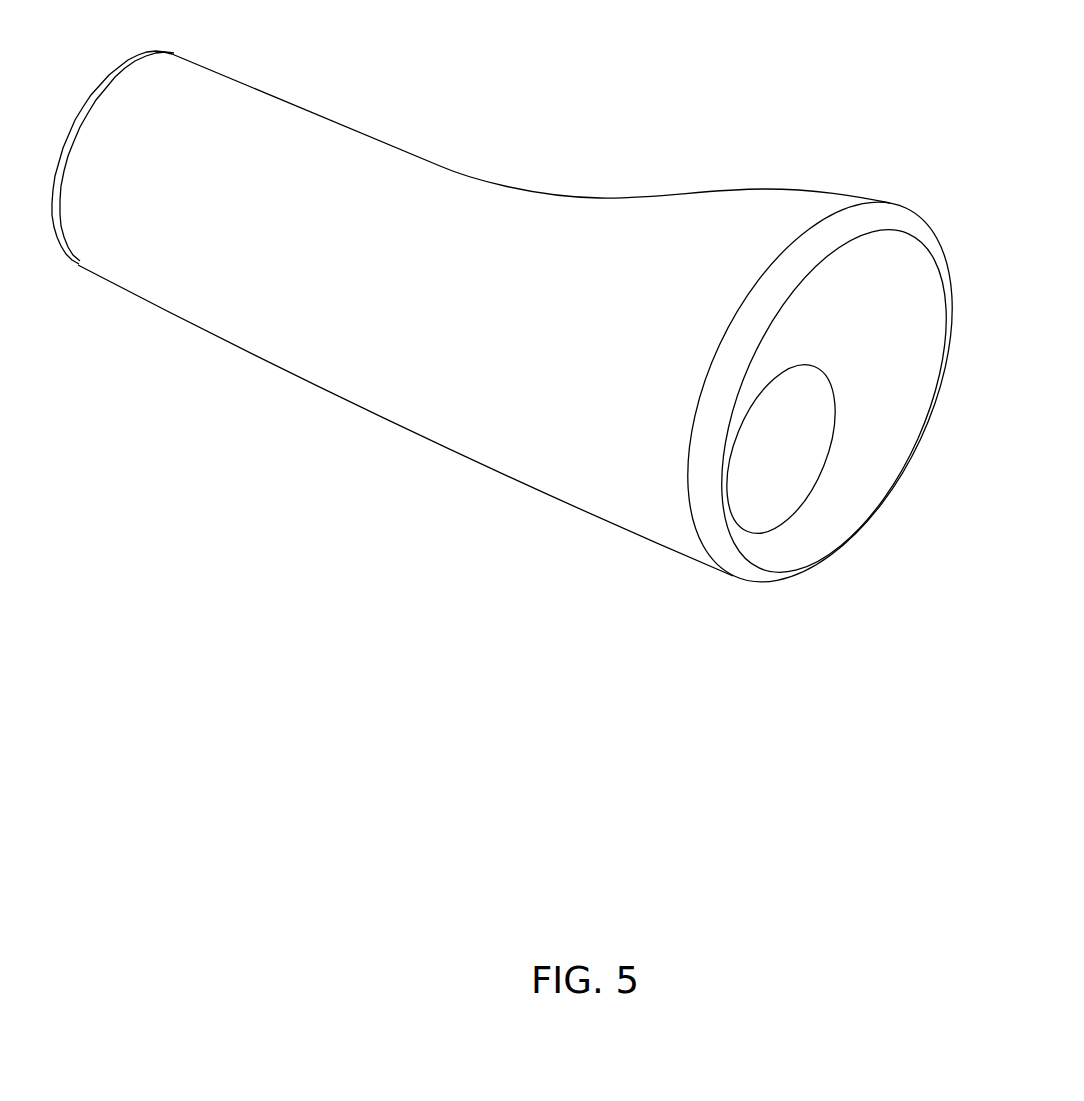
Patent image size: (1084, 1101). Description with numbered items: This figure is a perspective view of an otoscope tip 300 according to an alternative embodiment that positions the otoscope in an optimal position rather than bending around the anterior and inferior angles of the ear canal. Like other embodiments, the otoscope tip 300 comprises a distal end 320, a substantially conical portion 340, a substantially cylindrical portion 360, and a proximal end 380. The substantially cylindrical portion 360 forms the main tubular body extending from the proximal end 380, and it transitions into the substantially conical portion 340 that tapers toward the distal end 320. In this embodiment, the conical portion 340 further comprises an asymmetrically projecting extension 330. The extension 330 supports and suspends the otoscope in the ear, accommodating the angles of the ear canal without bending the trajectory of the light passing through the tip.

The otoscope tip 300 is at (353, 475).
The distal end 320 is at (723, 589).
The asymmetrically projecting extension 330 is at (887, 288).
The substantially conical portion 340 is at (754, 171).
The substantially cylindrical portion 360 is at (313, 93).
The proximal end 380 is at (67, 270).